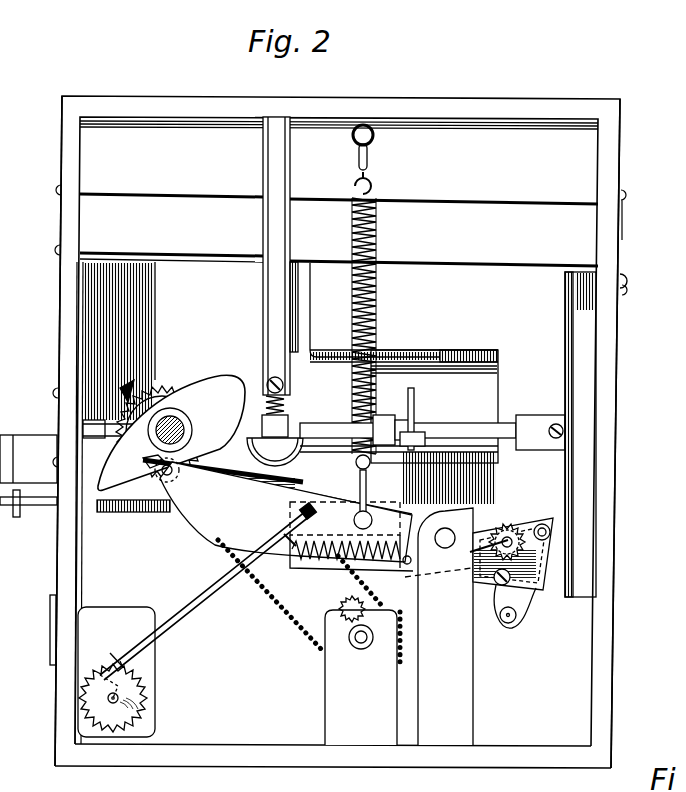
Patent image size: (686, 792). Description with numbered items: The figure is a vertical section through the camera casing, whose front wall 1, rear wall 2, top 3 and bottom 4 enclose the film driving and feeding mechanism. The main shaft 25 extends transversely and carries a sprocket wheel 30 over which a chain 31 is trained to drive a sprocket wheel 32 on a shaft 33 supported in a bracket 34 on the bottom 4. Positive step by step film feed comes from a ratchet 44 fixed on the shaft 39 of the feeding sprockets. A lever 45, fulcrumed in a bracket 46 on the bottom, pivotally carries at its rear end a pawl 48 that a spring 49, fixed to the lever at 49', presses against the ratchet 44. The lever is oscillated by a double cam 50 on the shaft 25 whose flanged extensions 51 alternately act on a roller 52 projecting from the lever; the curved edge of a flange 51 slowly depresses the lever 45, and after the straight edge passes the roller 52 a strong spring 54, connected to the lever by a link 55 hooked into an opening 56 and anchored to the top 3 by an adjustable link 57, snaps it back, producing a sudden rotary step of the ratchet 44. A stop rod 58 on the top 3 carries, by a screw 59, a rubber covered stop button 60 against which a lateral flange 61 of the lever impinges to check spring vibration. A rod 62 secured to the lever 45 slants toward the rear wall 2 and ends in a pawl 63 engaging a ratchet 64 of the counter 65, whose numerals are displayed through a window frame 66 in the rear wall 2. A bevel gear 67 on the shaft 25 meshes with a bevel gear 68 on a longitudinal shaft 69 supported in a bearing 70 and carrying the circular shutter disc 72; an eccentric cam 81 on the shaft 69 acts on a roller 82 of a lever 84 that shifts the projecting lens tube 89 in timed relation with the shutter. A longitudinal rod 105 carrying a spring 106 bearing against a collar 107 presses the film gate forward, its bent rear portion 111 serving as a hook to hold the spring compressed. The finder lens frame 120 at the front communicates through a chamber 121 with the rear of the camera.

The front wall 1 is at (620, 328).
The rear wall 2 is at (62, 322).
The top 3 is at (558, 104).
The bottom 4 is at (408, 768).
The main shaft 25 is at (186, 424).
The sprocket wheel 30 is at (187, 392).
The chain 31 is at (300, 628).
The sprocket wheel 32 is at (349, 617).
The shaft 33 is at (361, 650).
The bracket 34 is at (323, 740).
The shaft 39 is at (474, 557).
The ratchet 44 is at (506, 525).
The lever 45 is at (205, 530).
The bracket 46 is at (451, 730).
The pawl 48 is at (520, 553).
The spring 49 is at (573, 606).
The fixing point of spring 49' is at (469, 589).
The cam 50 is at (78, 500).
The flanged extensions 51 is at (222, 380).
The roller 52 is at (150, 462).
The spring 54 is at (378, 284).
The link 55 is at (357, 497).
The opening 56 is at (353, 520).
The link 57 is at (372, 182).
The stop rod 58 is at (290, 252).
The screw 59 is at (286, 397).
The stop button 60 is at (287, 441).
The lateral flange 61 is at (252, 479).
The rod 62 is at (201, 596).
The pawl 63 is at (101, 677).
The ratchet 64 is at (86, 706).
The counter 65 is at (155, 735).
The frame 66 is at (118, 657).
The bevel gear 67 is at (168, 383).
The bevel gear 68 is at (122, 390).
The shaft 69 is at (505, 423).
The bearing 70 is at (80, 418).
The circular disc 72 is at (570, 498).
The cam 81 is at (414, 420).
The roller 82 is at (424, 436).
The lever 84 is at (328, 489).
The projecting tube 89 is at (474, 394).
The rod 105 is at (416, 352).
The spring 106 is at (474, 346).
The collar 107 is at (440, 368).
The bent portion 111 is at (312, 350).
The frame 120 is at (626, 281).
The chamber 121 is at (480, 268).